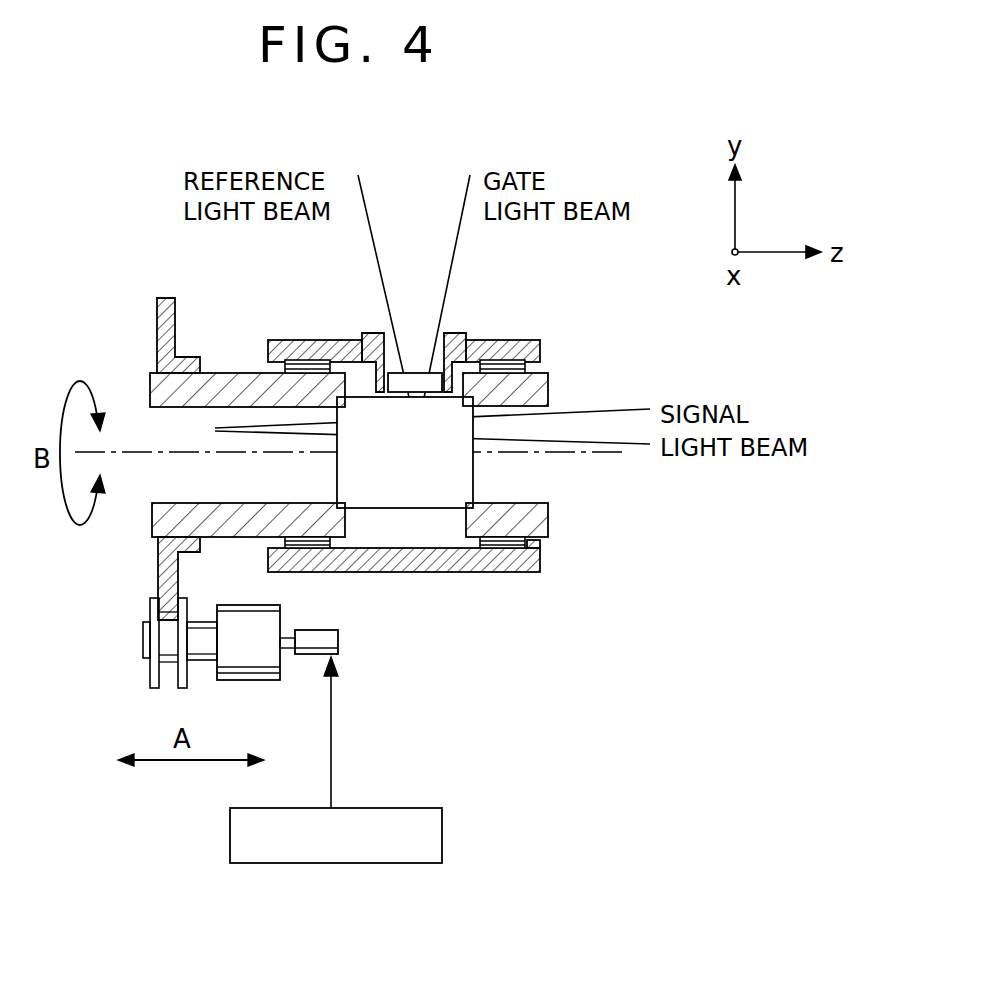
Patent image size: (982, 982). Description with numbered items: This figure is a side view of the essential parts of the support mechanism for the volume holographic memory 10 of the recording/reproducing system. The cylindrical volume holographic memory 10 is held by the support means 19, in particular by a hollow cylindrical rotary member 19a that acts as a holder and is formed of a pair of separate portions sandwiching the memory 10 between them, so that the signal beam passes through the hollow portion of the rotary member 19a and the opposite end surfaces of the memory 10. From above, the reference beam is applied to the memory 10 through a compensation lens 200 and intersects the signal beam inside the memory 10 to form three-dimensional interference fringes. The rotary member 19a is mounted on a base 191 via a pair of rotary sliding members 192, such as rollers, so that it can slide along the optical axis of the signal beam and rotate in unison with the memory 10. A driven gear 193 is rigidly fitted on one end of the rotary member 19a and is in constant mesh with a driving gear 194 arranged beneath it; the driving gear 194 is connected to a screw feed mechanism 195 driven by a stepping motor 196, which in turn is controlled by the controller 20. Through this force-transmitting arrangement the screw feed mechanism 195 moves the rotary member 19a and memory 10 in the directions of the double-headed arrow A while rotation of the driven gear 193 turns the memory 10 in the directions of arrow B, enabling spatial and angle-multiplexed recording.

The volume holographic memory 10 is at (426, 496).
The support means 19 is at (234, 674).
The hollow cylindrical rotary member 19a is at (226, 372).
The base 191 is at (540, 348).
The rotary sliding members 192 is at (312, 360).
The driven gear 193 is at (160, 330).
The driving gear 194 is at (147, 635).
The screw feed mechanism 195 is at (262, 682).
The stepping motor 196 is at (340, 641).
The compensation lens 200 is at (412, 372).
The controller 20 is at (443, 835).